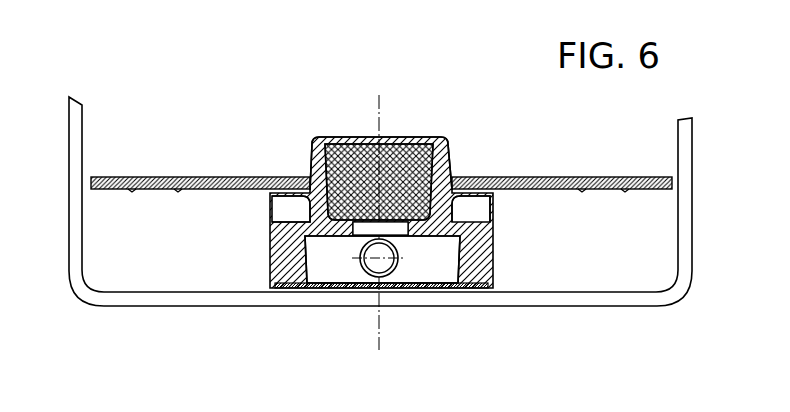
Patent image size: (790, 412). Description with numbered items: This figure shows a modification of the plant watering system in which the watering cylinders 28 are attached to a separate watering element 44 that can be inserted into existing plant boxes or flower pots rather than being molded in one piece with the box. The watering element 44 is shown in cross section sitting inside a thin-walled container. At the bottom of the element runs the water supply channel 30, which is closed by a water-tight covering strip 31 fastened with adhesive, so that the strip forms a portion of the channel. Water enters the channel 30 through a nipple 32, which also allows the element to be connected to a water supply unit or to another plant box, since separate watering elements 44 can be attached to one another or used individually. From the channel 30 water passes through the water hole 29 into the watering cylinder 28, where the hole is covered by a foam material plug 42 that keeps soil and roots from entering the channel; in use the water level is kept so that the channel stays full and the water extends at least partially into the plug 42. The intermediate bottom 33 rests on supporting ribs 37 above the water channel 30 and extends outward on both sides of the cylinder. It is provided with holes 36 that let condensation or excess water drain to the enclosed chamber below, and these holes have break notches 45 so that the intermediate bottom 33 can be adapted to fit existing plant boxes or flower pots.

The watering cylinder 28 is at (441, 170).
The water hole 29 is at (370, 226).
The water supply channel 30 is at (443, 245).
The covering strip 31 is at (418, 290).
The nipple 32 is at (372, 265).
The intermediate bottom 33 is at (202, 178).
The hole 36 is at (309, 178).
The supporting rib 37 is at (482, 207).
The foam material plug 42 is at (394, 160).
The separate watering element 44 is at (268, 257).
The break notch 45 is at (138, 178).